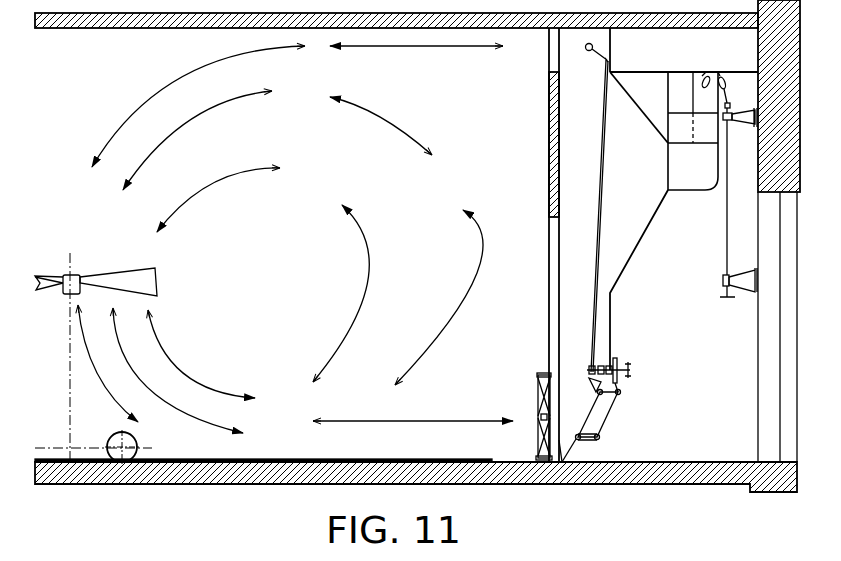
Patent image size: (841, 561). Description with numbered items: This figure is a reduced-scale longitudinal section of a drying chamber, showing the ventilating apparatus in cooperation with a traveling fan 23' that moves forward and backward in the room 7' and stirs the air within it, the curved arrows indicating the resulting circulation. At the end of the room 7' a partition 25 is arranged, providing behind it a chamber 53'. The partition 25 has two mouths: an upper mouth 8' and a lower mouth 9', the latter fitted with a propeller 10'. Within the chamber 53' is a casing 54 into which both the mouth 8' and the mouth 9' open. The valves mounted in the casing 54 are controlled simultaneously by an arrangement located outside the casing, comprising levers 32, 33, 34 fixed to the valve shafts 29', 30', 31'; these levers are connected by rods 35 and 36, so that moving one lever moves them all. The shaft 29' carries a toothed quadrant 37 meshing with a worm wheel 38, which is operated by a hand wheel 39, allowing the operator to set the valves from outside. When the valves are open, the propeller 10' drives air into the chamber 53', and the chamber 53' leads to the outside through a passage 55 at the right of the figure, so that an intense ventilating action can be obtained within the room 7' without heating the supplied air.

The room 7' is at (290, 239).
The mouth 8' is at (564, 51).
The mouth 9' is at (425, 413).
The propeller 10' is at (530, 416).
The traveling fan 23' is at (111, 272).
The partition 25 is at (549, 163).
The shaft 29' is at (662, 359).
The shaft 30' is at (572, 436).
The shaft 31' is at (577, 40).
The lever 32 is at (634, 381).
The lever 33 is at (599, 433).
The lever 34 is at (597, 57).
The rod 35 is at (617, 402).
The rod 36 is at (600, 172).
The toothed quadrant 37 is at (569, 421).
The worm wheel 38 is at (598, 371).
The hand wheel 39 is at (631, 366).
The chamber 53' is at (684, 189).
The casing 54 is at (640, 248).
The passage 55 is at (790, 378).